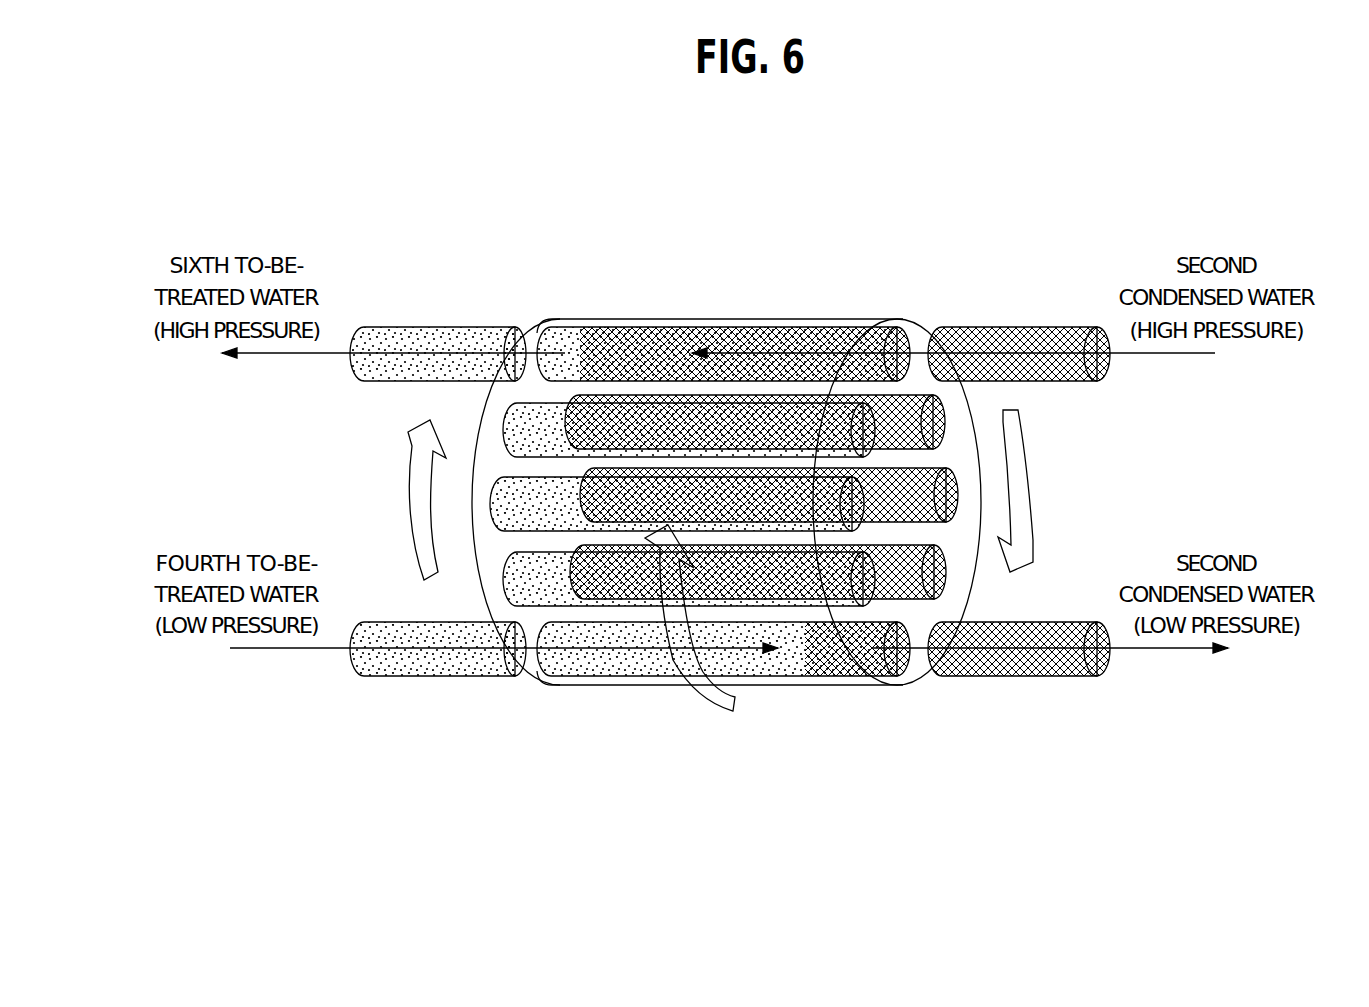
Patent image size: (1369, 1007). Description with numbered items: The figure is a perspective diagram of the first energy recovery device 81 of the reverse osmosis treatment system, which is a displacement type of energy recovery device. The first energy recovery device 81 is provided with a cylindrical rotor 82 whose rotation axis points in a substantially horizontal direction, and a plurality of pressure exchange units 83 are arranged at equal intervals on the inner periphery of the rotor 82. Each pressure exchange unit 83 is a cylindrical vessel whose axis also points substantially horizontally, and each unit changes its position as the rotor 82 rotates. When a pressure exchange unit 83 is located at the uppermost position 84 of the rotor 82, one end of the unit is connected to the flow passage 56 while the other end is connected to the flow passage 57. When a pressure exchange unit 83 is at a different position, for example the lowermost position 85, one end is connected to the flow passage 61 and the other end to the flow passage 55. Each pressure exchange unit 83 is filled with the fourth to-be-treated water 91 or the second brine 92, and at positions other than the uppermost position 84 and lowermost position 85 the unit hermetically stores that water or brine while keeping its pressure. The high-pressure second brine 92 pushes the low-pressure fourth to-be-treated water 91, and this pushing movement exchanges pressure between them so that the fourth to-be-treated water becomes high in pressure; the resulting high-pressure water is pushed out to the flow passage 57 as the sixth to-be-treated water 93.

The flow passage 55 is at (443, 677).
The flow passage 56 is at (995, 327).
The flow passage 57 is at (431, 327).
The flow passage 61 is at (995, 677).
The first energy recovery device 81 is at (870, 279).
The rotor 82 is at (710, 319).
The pressure exchange unit 83 is at (733, 397).
The uppermost position 84 is at (608, 327).
The lowermost position 85 is at (588, 677).
The fourth to-be-treated water 91 is at (565, 327).
The second brine 92 is at (662, 327).
The sixth to-be-treated water 93 is at (398, 334).